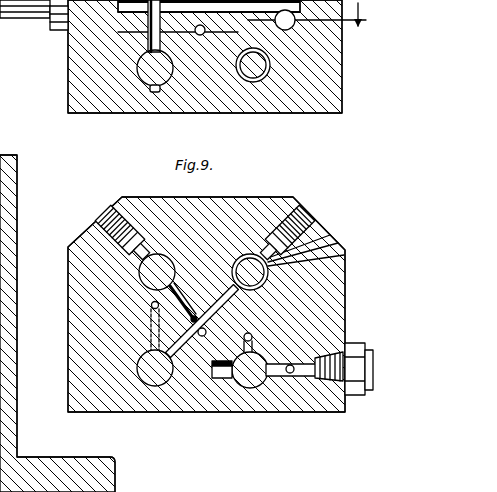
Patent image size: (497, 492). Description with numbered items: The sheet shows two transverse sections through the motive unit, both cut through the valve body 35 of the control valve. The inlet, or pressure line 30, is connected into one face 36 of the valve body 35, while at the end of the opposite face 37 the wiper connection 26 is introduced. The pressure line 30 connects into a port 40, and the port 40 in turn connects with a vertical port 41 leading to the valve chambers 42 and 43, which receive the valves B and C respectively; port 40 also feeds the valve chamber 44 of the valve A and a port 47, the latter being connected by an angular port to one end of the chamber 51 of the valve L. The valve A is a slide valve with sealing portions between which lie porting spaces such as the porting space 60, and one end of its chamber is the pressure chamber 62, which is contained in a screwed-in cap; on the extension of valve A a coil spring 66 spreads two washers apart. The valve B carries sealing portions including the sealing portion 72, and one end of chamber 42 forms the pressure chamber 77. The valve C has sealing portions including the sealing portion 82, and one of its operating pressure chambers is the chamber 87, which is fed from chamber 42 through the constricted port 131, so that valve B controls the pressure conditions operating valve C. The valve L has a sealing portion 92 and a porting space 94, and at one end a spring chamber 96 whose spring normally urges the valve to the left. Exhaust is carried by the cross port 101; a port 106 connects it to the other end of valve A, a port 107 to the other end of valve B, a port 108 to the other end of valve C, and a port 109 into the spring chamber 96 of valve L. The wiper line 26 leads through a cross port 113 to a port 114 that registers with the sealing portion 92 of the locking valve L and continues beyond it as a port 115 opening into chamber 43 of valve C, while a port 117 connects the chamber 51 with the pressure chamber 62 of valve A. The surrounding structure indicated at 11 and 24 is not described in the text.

In FIG. 8, the valve body 11 is at (218, 128).
In FIG. 9, the body block 24 is at (285, 196).
In FIG. 9, the wiper connection 26 is at (362, 350).
In FIG. 8, the inlet 30 is at (26, 18).
In FIG. 9, the valve body 35 is at (305, 414).
In FIG. 8, the face 36 is at (68, 103).
In FIG. 8, the opposite face 37 is at (342, 100).
In FIG. 9, the opposite face 37 is at (345, 398).
In FIG. 8, the port 40 is at (107, 12).
In FIG. 8, the vertical port 41 is at (147, 42).
In FIG. 9, the valve chamber 42 is at (140, 270).
In FIG. 8, the valve chamber 43 is at (150, 82).
In FIG. 9, the valve chamber 43 is at (138, 370).
In FIG. 9, the valve chamber 44 is at (320, 262).
In FIG. 8, the port 47 is at (294, 26).
In FIG. 8, the valve chamber 51 is at (272, 72).
In FIG. 9, the valve chamber 51 is at (244, 400).
In FIG. 9, the porting space 60 is at (305, 245).
In FIG. 9, the pressure chamber 62 is at (52, 468).
In FIG. 9, the coil spring 66 is at (18, 462).
In FIG. 9, the sealing portion 72 is at (135, 262).
In FIG. 9, the pressure chamber 77 is at (0, 402).
In FIG. 9, the sealing portion 82 is at (138, 368).
In FIG. 9, the pressure chamber 87 is at (0, 260).
In FIG. 9, the sealing portion 92 is at (238, 395).
In FIG. 8, the porting space 94 is at (272, 62).
In FIG. 9, the spring chamber 96 is at (17, 188).
In FIG. 8, the cross port 101 is at (200, 35).
In FIG. 9, the cross port 101 is at (203, 336).
In FIG. 9, the port 106 is at (258, 303).
In FIG. 9, the port 107 is at (205, 298).
In FIG. 9, the port 108 is at (183, 350).
In FIG. 9, the port 109 is at (205, 278).
In FIG. 9, the cross port 113 is at (270, 388).
In FIG. 9, the port 114 is at (303, 414).
In FIG. 9, the port 115 is at (225, 385).
In FIG. 9, the port 117 is at (252, 334).
In FIG. 9, the constricted port 131 is at (150, 305).
In FIG. 9, the valve A is at (262, 274).
In FIG. 9, the valve B is at (157, 272).
In FIG. 8, the valve C is at (150, 72).
In FIG. 9, the valve C is at (155, 370).
In FIG. 8, the locking valve L is at (255, 77).
In FIG. 9, the locking valve L is at (250, 390).